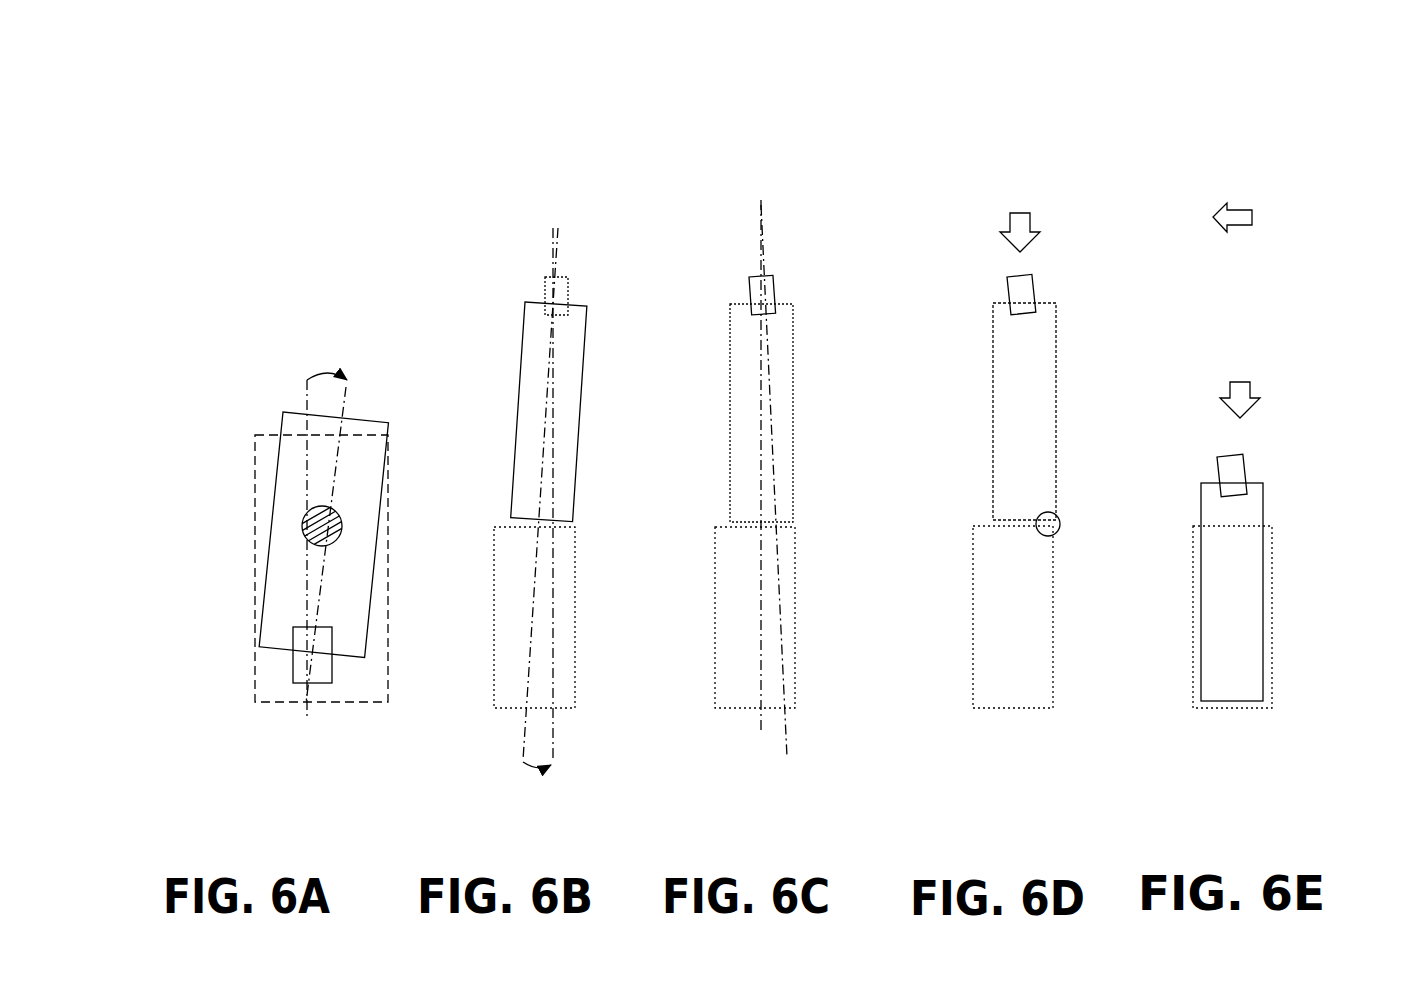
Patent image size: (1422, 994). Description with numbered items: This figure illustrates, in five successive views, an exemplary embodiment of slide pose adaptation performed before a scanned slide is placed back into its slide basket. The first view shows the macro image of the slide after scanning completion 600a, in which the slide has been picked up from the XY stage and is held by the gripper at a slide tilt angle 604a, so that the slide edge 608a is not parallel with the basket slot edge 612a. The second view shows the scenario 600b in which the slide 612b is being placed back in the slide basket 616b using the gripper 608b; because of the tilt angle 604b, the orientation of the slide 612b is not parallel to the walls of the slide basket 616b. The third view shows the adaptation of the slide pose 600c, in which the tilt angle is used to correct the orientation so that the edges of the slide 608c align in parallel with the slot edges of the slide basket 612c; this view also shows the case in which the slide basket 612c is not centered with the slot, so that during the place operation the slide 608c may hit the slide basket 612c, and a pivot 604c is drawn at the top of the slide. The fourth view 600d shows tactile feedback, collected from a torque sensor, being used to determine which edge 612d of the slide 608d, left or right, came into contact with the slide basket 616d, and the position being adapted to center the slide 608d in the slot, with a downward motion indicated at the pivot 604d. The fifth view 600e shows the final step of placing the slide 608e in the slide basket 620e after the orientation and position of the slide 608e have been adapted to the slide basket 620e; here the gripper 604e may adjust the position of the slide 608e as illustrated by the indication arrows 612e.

In FIG. 6A, the macro image of the slide after scanning completion 600a is at (293, 278).
In FIG. 6A, the slide tilt angle 604a is at (309, 378).
In FIG. 6A, the slide edge 608a is at (268, 557).
In FIG. 6A, the basket slot edge 612a is at (257, 657).
In FIG. 6B, the scenario of slide being placed back in slide basket 600b is at (545, 108).
In FIG. 6B, the tilt angle 604b is at (513, 760).
In FIG. 6B, the gripper 608b is at (567, 287).
In FIG. 6B, the slide 612b is at (580, 423).
In FIG. 6B, the slide basket 616b is at (573, 622).
In FIG. 6C, the adaptation of slide pose 600c is at (795, 98).
In FIG. 6C, the pivot 604c is at (773, 282).
In FIG. 6C, the slide 608c is at (792, 410).
In FIG. 6C, the slide basket 612c is at (793, 630).
In FIG. 6D, the door configuration (dropping) 600d is at (1020, 88).
In FIG. 6D, the pivot with downward motion arrow 604d is at (1032, 290).
In FIG. 6D, the slide 608d is at (1055, 405).
In FIG. 6D, the edge of slide 612d is at (1057, 517).
In FIG. 6D, the slide basket 616d is at (1053, 633).
In FIG. 6E, the door configuration (sliding) 600e is at (1241, 85).
In FIG. 6E, the motion direction arrows 612e is at (1242, 208).
In FIG. 6E, the gripper 604e is at (1243, 458).
In FIG. 6E, the slide 608e is at (1270, 573).
In FIG. 6E, the slide basket 620e is at (1275, 675).